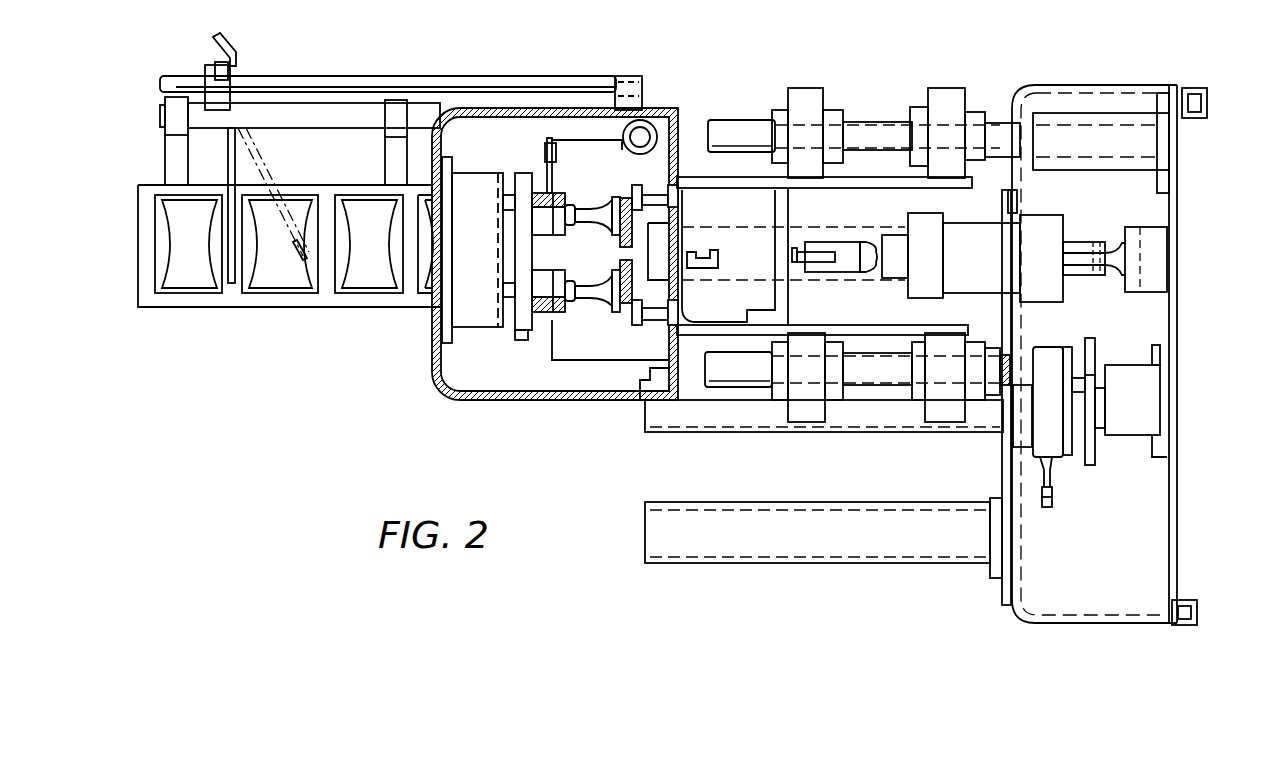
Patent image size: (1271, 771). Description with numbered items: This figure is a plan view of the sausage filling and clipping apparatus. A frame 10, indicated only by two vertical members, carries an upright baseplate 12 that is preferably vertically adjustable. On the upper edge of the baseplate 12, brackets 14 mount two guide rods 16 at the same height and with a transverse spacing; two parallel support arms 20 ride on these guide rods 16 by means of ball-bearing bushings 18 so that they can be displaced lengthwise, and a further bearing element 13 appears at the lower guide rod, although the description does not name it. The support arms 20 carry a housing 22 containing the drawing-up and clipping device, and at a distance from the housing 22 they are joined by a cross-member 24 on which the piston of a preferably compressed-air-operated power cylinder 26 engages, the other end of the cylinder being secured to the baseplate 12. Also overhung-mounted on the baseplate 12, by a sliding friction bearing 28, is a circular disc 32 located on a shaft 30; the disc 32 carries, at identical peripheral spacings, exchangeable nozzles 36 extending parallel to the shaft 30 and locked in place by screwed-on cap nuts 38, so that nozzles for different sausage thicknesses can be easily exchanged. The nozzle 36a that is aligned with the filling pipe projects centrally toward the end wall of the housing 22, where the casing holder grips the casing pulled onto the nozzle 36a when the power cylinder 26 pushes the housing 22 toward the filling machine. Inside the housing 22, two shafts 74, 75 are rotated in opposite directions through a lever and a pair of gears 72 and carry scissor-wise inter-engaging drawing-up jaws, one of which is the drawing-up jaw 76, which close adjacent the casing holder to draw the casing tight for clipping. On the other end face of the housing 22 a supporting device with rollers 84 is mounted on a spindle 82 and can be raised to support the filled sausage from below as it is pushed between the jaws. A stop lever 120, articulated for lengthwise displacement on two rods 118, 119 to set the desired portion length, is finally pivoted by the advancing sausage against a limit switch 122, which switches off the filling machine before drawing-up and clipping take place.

The frame 10 is at (1207, 104).
The baseplate 12 is at (1178, 510).
The lower roller set 13 is at (927, 413).
The brackets 14 is at (1087, 113).
The guide rods 16 is at (748, 121).
The ball-bearing bushings 18 is at (910, 115).
The support arms 20 is at (907, 188).
The housing 22 is at (512, 400).
The cross-member 24 is at (820, 258).
The power cylinder 26 is at (991, 255).
The sliding friction bearing 28 is at (1142, 423).
The shaft 30 is at (1097, 440).
The circular disc 32 is at (1004, 464).
The nozzles 36 is at (673, 410).
The aligned nozzle 36a is at (728, 270).
The cap nuts 38 is at (990, 580).
The pair of gears 72 is at (527, 335).
The shaft 74 is at (512, 207).
The shaft 75 is at (510, 292).
The drawing-up jaw 76 is at (626, 200).
The spindle 82 is at (337, 113).
The rollers 84 is at (202, 257).
The rod 118 is at (401, 66).
The rod 119 is at (473, 75).
The stop lever 120 is at (275, 307).
The limit switch 122 is at (207, 58).